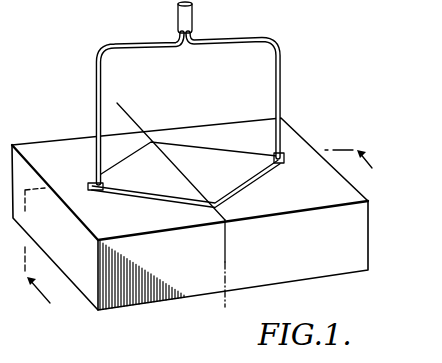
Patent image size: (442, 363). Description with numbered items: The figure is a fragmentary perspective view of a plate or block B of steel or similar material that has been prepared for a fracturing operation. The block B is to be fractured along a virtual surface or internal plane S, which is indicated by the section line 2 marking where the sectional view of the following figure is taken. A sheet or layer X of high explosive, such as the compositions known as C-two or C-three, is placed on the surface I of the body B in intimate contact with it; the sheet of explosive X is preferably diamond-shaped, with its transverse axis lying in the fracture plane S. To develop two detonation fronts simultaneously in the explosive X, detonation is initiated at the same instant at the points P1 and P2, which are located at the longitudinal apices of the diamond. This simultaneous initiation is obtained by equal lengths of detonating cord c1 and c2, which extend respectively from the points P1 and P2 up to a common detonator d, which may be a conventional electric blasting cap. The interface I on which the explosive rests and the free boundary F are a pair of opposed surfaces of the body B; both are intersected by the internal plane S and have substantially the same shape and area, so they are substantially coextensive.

The plate or block B is at (336, 285).
The free boundary F is at (92, 287).
The surface (interface) I is at (68, 145).
The section line for FIGURE 2 is at (198, 232).
The virtual surface or internal plane S is at (228, 298).
The detonating cord c1 is at (115, 52).
The detonating cord c2 is at (271, 47).
The detonator d is at (192, 13).
The sheet or layer of high explosive X is at (237, 180).
The initiation point P1 is at (95, 191).
The initiation point P2 is at (290, 168).